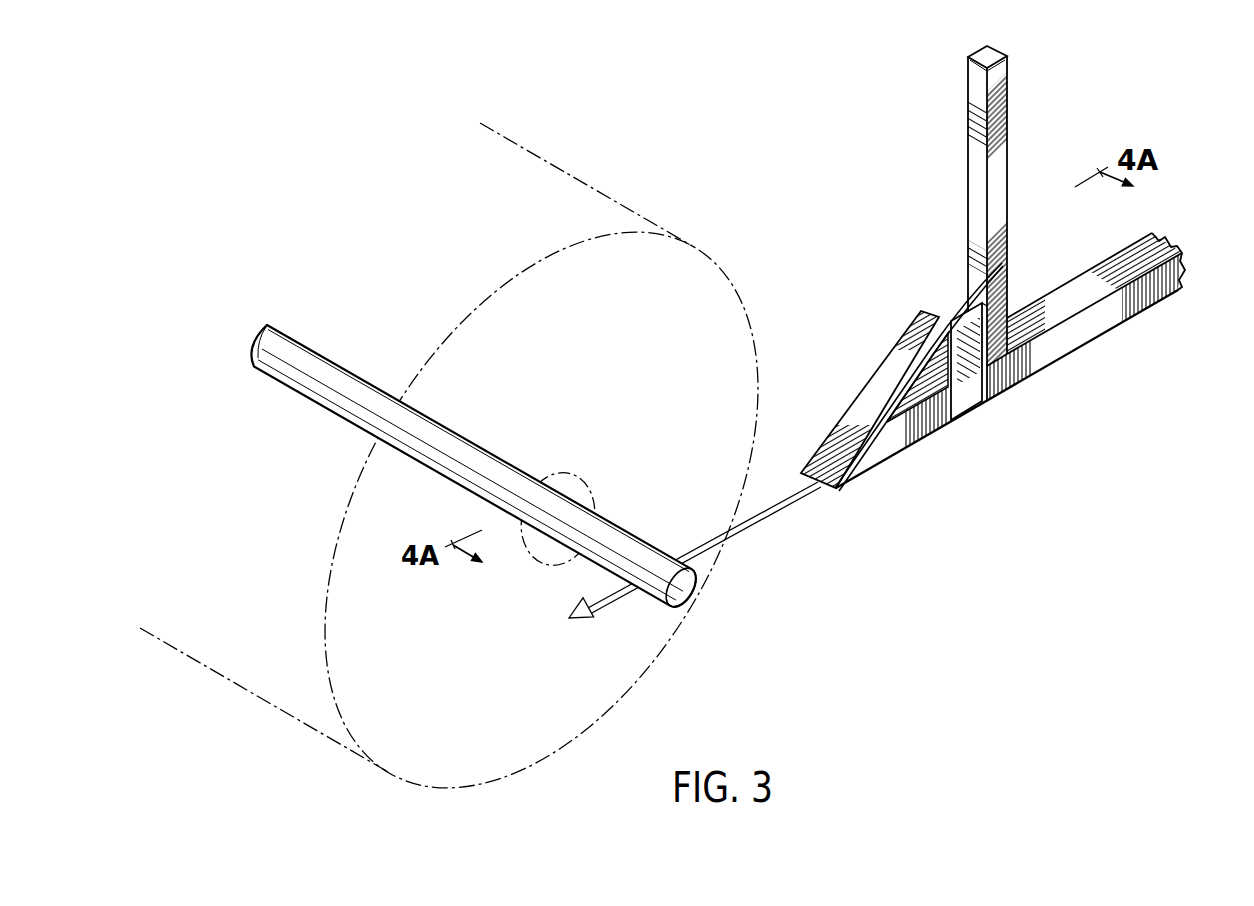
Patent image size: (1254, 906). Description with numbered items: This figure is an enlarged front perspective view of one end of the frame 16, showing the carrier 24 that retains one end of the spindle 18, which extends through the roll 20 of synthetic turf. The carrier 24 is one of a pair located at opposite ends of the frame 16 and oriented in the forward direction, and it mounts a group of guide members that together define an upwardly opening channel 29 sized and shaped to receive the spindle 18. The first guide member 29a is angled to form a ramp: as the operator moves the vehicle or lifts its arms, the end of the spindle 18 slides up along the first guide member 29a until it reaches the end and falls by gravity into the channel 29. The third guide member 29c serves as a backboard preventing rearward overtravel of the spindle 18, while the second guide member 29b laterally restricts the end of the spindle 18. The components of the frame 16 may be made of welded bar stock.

The frame 16 is at (1015, 268).
The spindle 18 is at (490, 450).
The roll of synthetic turf 20 is at (205, 667).
The carrier 24 is at (1122, 312).
The channel 29 is at (934, 268).
The first guide member 29a is at (905, 327).
The second guide member 29b is at (984, 286).
The third guide member 29c is at (1008, 186).